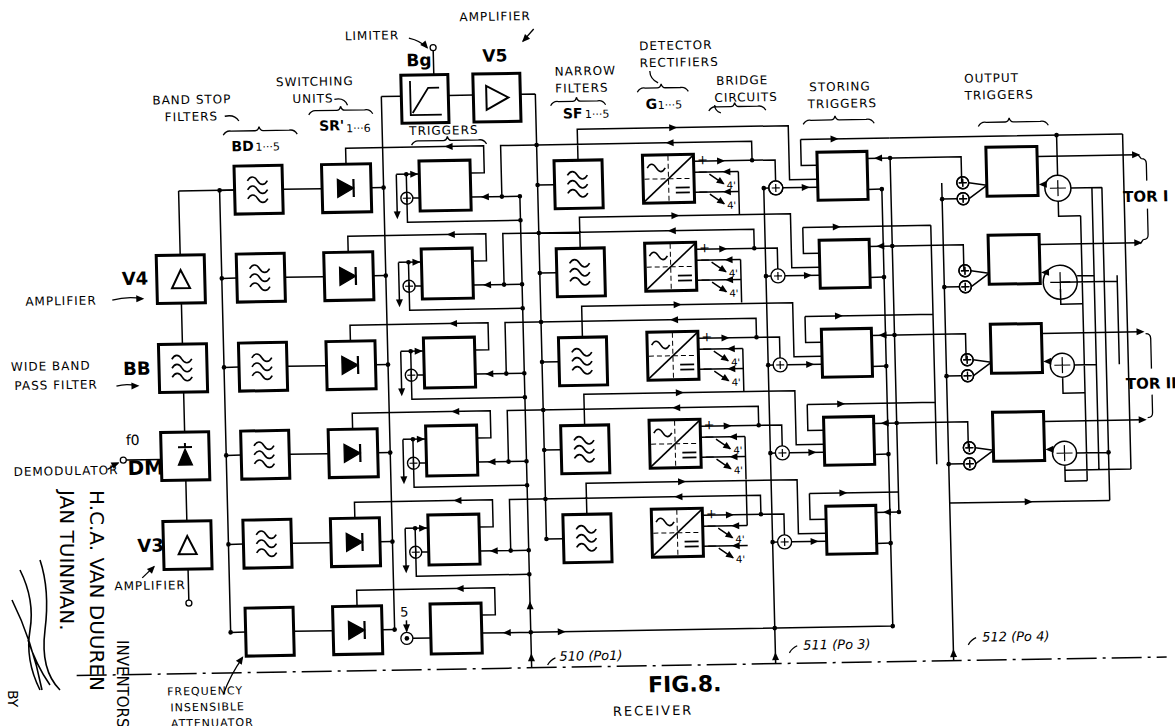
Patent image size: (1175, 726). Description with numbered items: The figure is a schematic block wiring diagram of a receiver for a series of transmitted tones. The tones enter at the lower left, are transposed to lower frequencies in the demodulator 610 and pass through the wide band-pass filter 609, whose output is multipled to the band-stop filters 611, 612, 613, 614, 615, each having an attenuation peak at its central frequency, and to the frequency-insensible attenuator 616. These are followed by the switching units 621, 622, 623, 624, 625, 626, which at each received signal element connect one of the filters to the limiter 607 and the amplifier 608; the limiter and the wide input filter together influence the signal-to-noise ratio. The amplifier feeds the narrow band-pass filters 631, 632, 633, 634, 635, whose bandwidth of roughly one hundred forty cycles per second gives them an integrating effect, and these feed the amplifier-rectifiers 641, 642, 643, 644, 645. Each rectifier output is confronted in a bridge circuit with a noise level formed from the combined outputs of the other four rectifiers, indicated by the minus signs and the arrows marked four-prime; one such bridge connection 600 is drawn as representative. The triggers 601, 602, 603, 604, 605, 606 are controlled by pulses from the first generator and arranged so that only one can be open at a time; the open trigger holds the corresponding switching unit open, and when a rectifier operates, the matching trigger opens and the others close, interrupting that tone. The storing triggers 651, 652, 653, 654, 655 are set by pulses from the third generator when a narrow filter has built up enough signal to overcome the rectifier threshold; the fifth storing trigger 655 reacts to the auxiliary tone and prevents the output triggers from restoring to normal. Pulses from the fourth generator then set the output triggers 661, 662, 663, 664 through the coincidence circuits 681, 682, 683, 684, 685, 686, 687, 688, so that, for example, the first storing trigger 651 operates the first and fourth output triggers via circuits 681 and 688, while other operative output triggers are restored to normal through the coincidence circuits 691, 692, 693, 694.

The bridge circuit connection 600 is at (783, 183).
The trigger T1 601 is at (476, 193).
The trigger T2 602 is at (476, 281).
The trigger T3 603 is at (476, 370).
The trigger T4 604 is at (476, 458).
The trigger T5 605 is at (476, 547).
The trigger T6 606 is at (476, 636).
The limiter Bg 607 is at (409, 98).
The amplifier V5 608 is at (510, 96).
The wide band-pass filter BB 609 is at (160, 340).
The demodulator DM 610 is at (160, 428).
The band-stop filter BD1 611 is at (254, 210).
The band-stop filter BD2 612 is at (254, 298).
The band-stop filter BD3 613 is at (254, 387).
The band-stop filter BD4 614 is at (254, 475).
The band-stop filter BD5 615 is at (254, 564).
The frequency-insensible attenuator db 616 is at (254, 652).
The switching unit SR'1 621 is at (336, 210).
The switching unit SR'2 622 is at (336, 298).
The switching unit SR'3 623 is at (336, 387).
The switching unit SR'4 624 is at (336, 475).
The switching unit SR'5 625 is at (336, 564).
The switching unit SR'6 626 is at (336, 652).
The narrow band-pass filter SF1 631 is at (604, 210).
The narrow band-pass filter SF2 632 is at (604, 298).
The narrow band-pass filter SF3 633 is at (604, 387).
The narrow band-pass filter SF4 634 is at (604, 475).
The narrow band-pass filter SF5 635 is at (604, 564).
The amplifier-rectifier G1 641 is at (649, 185).
The amplifier-rectifier G2 642 is at (649, 273).
The amplifier-rectifier G3 643 is at (649, 362).
The amplifier-rectifier G4 644 is at (649, 450).
The amplifier-rectifier G5 645 is at (649, 539).
The storing trigger A 651 is at (836, 205).
The storing trigger B 652 is at (836, 293).
The storing trigger C 653 is at (836, 382).
The storing trigger D 654 is at (836, 470).
The storing trigger E 655 is at (836, 559).
The output trigger WI 661 is at (1003, 204).
The output trigger RI 662 is at (1003, 292).
The output trigger WII 663 is at (1003, 381).
The output trigger RII 664 is at (1003, 469).
The coincidence circuit 681 is at (962, 187).
The coincidence circuit 682 is at (968, 211).
The coincidence circuit 683 is at (980, 271).
The coincidence circuit 684 is at (968, 299).
The coincidence circuit 685 is at (976, 360).
The coincidence circuit 686 is at (968, 388).
The coincidence circuit 687 is at (976, 448).
The coincidence circuit 688 is at (968, 476).
The coincidence circuit 691 is at (1069, 189).
The coincidence circuit 692 is at (1075, 273).
The coincidence circuit 693 is at (1059, 386).
The coincidence circuit 694 is at (1059, 474).